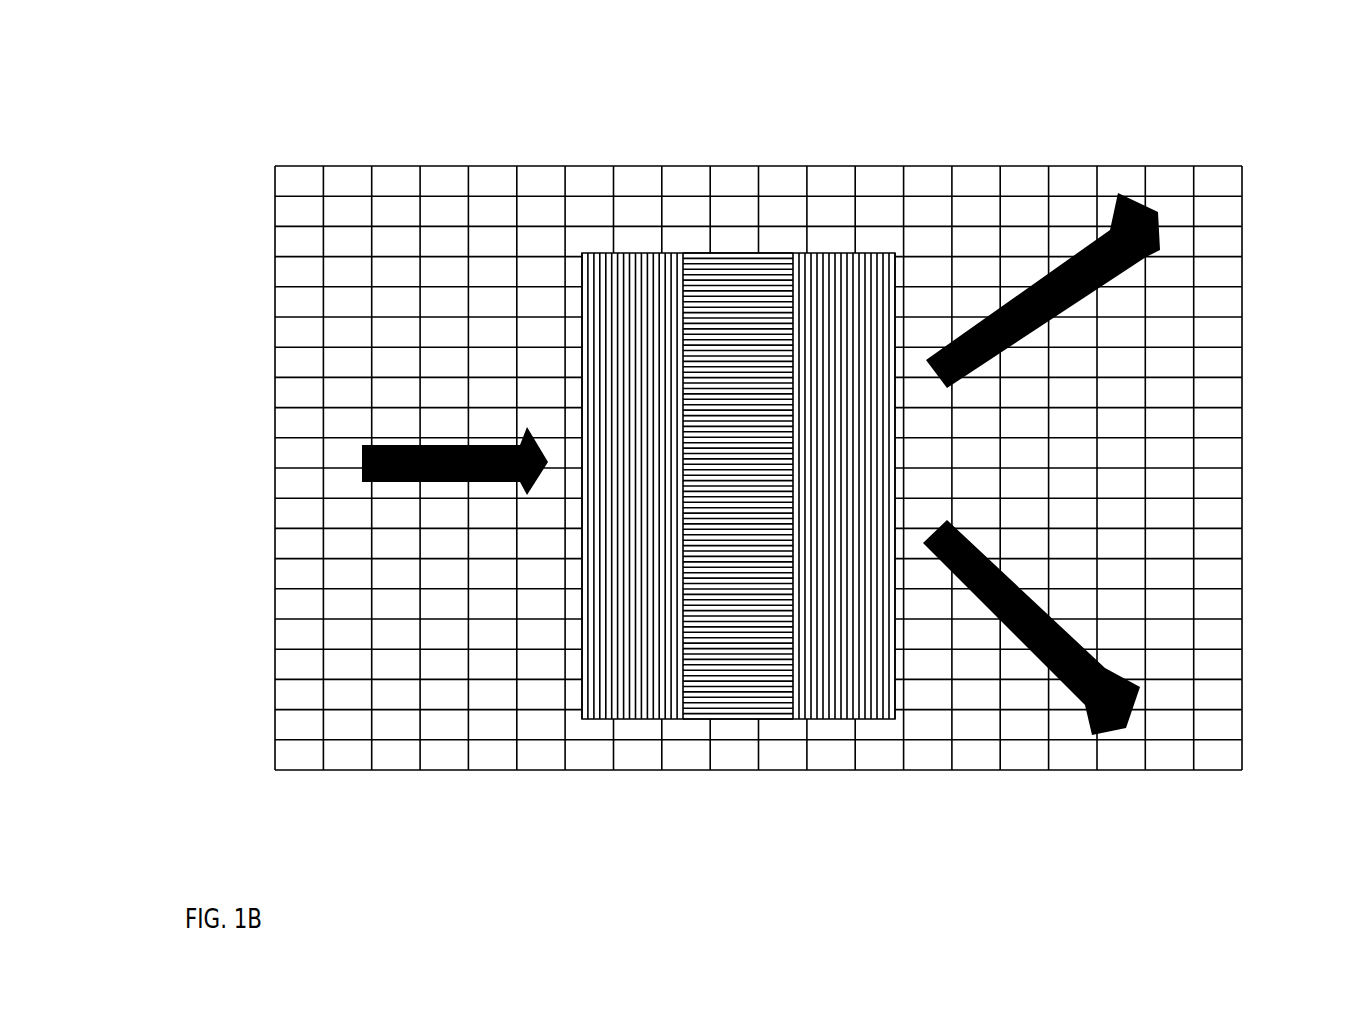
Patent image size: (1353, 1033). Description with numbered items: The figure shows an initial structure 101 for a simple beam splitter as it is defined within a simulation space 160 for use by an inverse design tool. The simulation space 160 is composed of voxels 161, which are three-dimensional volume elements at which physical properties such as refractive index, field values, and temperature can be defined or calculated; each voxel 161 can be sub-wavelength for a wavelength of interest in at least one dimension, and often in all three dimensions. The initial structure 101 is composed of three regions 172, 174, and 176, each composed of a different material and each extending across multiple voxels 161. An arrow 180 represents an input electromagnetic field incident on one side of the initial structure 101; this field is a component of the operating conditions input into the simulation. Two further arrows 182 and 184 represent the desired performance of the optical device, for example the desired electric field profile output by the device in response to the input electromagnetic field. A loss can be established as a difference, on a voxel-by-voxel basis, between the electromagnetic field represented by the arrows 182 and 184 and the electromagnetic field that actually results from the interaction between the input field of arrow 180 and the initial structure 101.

The initial structure 101 is at (652, 488).
The simulation space 160 is at (258, 247).
The voxel 161 is at (1072, 185).
The region 172 is at (655, 677).
The region 174 is at (723, 680).
The region 176 is at (830, 678).
The arrow 180 is at (347, 462).
The arrow 182 is at (1085, 290).
The arrow 184 is at (1050, 603).